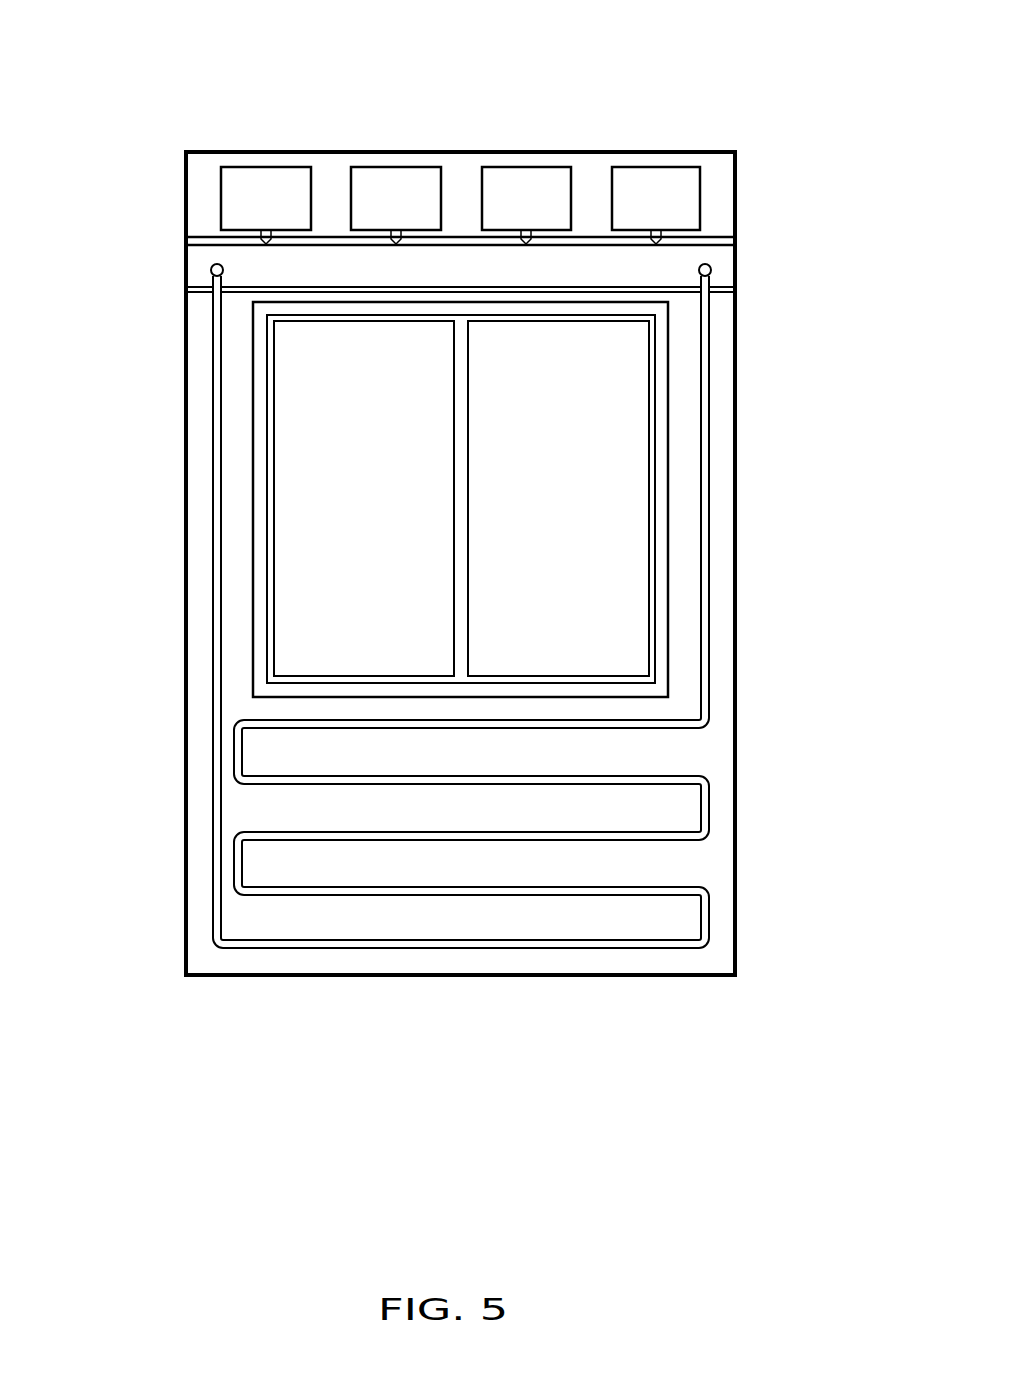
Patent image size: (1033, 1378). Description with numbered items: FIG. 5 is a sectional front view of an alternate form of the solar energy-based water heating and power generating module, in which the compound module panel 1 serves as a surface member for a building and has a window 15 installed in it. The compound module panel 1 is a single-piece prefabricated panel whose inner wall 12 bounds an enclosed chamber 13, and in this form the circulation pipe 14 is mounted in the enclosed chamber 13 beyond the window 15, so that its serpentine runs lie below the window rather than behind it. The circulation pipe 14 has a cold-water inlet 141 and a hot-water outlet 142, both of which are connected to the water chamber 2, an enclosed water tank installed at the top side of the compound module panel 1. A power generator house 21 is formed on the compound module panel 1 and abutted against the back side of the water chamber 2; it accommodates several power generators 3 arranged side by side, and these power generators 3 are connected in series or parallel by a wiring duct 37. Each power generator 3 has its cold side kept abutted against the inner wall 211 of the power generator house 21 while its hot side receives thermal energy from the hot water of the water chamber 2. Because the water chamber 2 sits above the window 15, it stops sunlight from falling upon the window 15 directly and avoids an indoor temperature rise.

The compound module panel 1 is at (738, 932).
The water chamber 2 is at (460, 127).
The power generator 3 is at (220, 193).
The power generator house 21 is at (461, 126).
The inner wall 211 is at (461, 237).
The wiring duct 37 is at (712, 238).
The window 15 is at (605, 502).
The enclosed chamber 13 is at (476, 591).
The inner wall 12 is at (545, 610).
The circulation pipe 14 is at (703, 813).
The cold-water inlet 141 is at (212, 272).
The hot-water outlet 142 is at (712, 272).